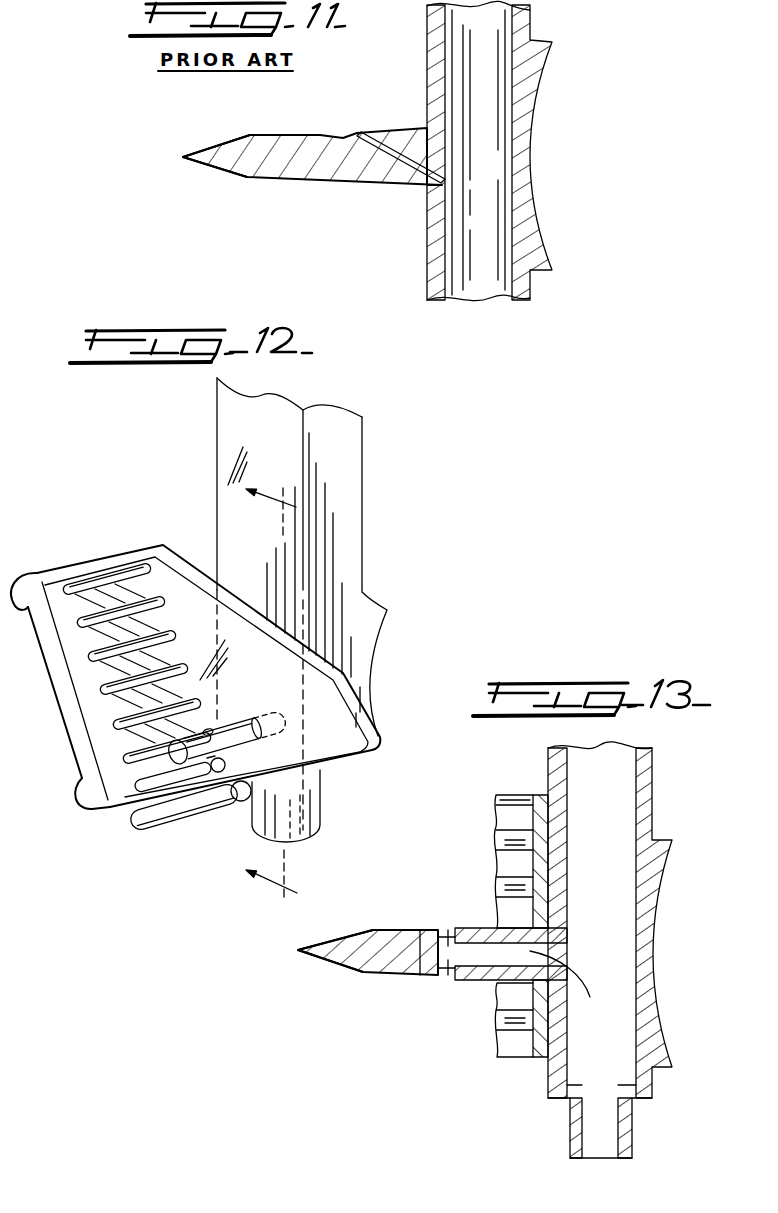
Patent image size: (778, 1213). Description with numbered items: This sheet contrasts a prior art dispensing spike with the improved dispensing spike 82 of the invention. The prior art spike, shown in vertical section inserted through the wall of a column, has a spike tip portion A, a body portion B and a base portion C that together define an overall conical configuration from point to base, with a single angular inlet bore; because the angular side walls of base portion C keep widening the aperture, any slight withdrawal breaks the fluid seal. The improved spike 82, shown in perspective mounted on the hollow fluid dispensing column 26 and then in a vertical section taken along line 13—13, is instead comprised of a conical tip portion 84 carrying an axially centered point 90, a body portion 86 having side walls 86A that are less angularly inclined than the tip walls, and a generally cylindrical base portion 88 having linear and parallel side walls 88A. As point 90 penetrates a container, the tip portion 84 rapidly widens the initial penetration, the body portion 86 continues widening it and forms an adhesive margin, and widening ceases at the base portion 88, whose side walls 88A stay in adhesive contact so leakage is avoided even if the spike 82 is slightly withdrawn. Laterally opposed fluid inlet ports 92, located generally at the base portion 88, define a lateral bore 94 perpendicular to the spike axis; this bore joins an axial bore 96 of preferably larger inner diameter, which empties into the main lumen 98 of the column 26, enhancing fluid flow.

In FIG. 11, the spike tip portion A is at (222, 167).
In FIG. 11, the body portion B is at (297, 180).
In FIG. 11, the base portion C is at (422, 181).
In FIG. 12, the section line 13— 13 is at (277, 681).
In FIG. 12, the fluid dispensing column 26 is at (337, 503).
In FIG. 12, the dispensing spike 82 is at (167, 743).
In FIG. 13, the dispensing spike 82 is at (361, 962).
In FIG. 12, the conical tip portion 84 is at (176, 748).
In FIG. 13, the conical tip portion 84 is at (335, 962).
In FIG. 12, the body portion 86 is at (213, 760).
In FIG. 13, the body portion 86 is at (390, 976).
In FIG. 13, the side walls 86A is at (418, 977).
In FIG. 12, the base portion 88 is at (250, 735).
In FIG. 13, the base portion 88 is at (478, 982).
In FIG. 13, the side walls 88A is at (482, 927).
In FIG. 12, the point 90 is at (197, 738).
In FIG. 13, the point 90 is at (300, 949).
In FIG. 12, the fluid inlet ports 92 is at (205, 734).
In FIG. 13, the fluid inlet ports 92 is at (448, 928).
In FIG. 13, the lateral bore 94 is at (444, 946).
In FIG. 13, the axial bore 96 is at (564, 984).
In FIG. 13, the main lumen 98 is at (613, 952).